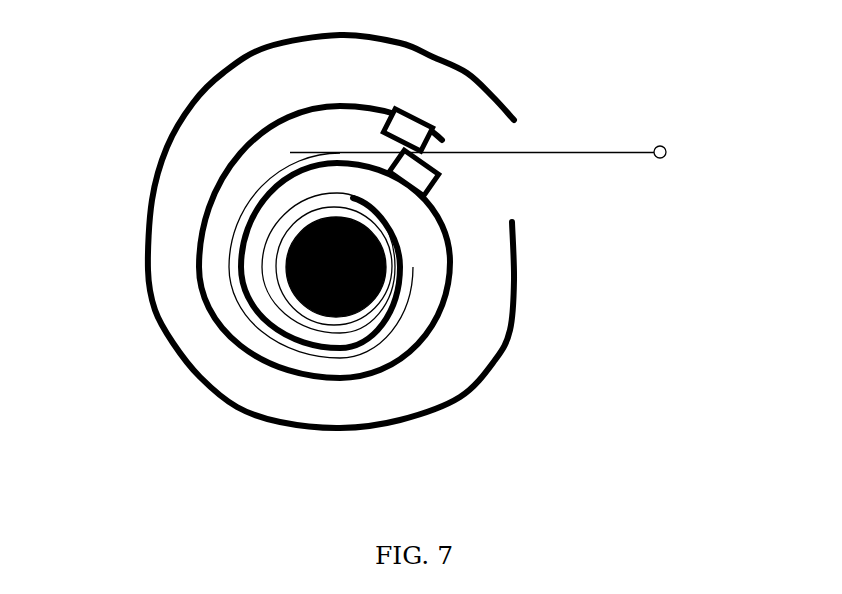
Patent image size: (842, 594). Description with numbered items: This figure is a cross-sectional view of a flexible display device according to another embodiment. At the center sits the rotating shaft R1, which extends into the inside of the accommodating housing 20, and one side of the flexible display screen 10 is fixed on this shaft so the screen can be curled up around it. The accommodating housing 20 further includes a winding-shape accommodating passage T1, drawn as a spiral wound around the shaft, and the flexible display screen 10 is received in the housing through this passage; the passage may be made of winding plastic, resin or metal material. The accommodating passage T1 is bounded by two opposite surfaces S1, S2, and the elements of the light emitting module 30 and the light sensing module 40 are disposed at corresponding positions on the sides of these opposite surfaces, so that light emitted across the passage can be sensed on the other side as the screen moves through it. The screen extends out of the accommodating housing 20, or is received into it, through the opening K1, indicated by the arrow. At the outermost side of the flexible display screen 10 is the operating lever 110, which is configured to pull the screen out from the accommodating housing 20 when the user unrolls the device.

The flexible display screen 10 is at (597, 152).
The accommodating housing 20 is at (190, 105).
The light emitting module 30 is at (417, 117).
The light sensing module 40 is at (437, 183).
The operating lever 110 is at (665, 147).
The accommodating passage T1 is at (193, 262).
The opposite surface of the accommodating passage S1 is at (362, 116).
The opposite surface of the accommodating passage S2 is at (455, 236).
The rotating shaft R1 is at (345, 314).
The opening K1 is at (533, 182).